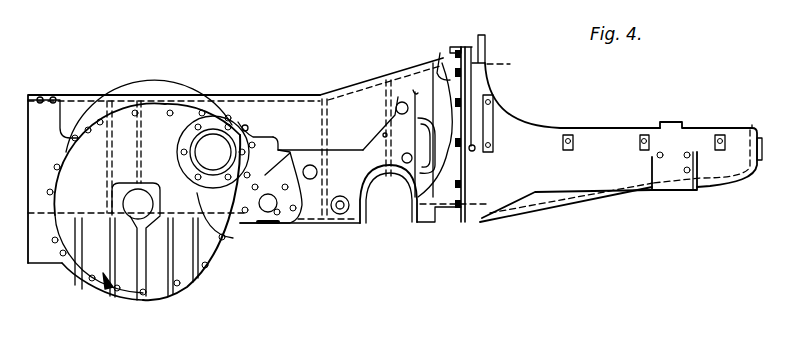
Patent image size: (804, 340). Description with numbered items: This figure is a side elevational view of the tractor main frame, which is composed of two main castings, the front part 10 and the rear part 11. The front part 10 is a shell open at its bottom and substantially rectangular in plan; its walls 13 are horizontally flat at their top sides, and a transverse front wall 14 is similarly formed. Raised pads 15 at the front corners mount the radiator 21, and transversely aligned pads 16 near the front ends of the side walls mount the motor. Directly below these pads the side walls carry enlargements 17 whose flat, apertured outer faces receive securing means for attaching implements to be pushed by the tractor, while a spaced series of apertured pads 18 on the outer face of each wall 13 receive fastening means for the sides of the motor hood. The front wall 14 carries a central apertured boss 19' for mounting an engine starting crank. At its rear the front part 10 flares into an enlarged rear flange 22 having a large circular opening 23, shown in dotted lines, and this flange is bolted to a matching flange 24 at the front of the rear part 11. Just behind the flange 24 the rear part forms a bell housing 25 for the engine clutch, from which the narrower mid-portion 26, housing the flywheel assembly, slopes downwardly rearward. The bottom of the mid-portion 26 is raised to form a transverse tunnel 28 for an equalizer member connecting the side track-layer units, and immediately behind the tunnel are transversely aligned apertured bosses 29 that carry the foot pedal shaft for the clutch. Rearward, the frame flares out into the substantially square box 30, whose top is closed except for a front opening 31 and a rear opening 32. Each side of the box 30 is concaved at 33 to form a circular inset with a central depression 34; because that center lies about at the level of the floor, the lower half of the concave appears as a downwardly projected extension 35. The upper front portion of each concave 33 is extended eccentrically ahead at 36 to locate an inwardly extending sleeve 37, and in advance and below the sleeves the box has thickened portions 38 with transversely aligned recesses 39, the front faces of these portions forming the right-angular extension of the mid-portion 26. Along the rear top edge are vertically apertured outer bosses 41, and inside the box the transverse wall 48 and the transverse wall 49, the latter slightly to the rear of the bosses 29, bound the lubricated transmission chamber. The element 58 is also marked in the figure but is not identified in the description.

The front part 10 is at (627, 126).
The rear part 11 is at (97, 103).
The walls 13 is at (597, 127).
The transverse front wall 14 is at (776, 116).
The raised pads 15 is at (733, 124).
The pads 16 is at (671, 127).
The enlargements 17 is at (675, 175).
The integral pads 18 is at (494, 140).
The apertured boss 19' is at (770, 164).
The radiator 21 is at (455, 48).
The rear flange 22 is at (474, 45).
The circular opening 23 is at (504, 64).
The flange 24 is at (383, 130).
The bell housing 25 is at (445, 190).
The mid-portion 26 is at (341, 92).
The transverse tunnel 28 is at (389, 176).
The apertured bosses 29 is at (335, 214).
The box 30 is at (36, 260).
The front opening 31 is at (220, 85).
The rear opening 32 is at (143, 85).
The concaved part 33 is at (225, 223).
The depressions 34 is at (144, 194).
The integral extension 35 is at (102, 272).
The eccentric extension 36 is at (245, 125).
The sleeve 37 is at (195, 143).
The thickened portions 38 is at (271, 180).
The recesses 39 is at (292, 223).
The outer bosses 41 is at (66, 82).
The transverse wall 48 is at (143, 112).
The transverse wall 49 is at (322, 128).
The plate edge 58 is at (288, 140).